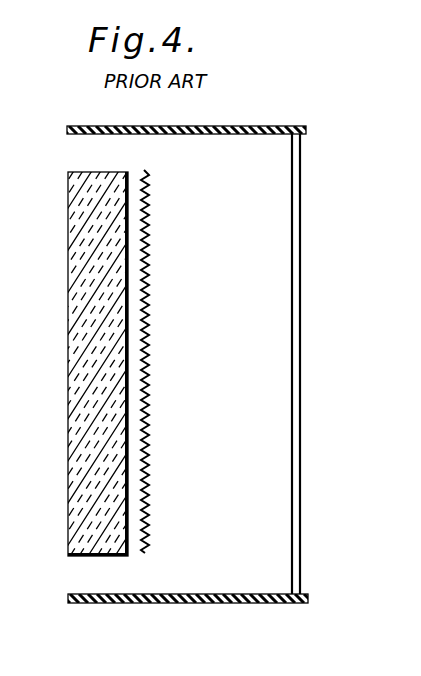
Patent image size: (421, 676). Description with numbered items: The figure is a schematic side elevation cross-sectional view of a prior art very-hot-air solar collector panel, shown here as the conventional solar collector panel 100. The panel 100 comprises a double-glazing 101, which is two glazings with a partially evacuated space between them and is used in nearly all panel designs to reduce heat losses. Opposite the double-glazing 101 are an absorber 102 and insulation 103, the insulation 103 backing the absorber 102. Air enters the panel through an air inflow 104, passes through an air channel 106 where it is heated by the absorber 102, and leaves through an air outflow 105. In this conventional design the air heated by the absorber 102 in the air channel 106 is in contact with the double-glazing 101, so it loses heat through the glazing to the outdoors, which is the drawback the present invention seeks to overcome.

The conventional solar collector panel 100 is at (188, 359).
The double-glazing 101 is at (301, 309).
The absorber 102 is at (142, 246).
The insulation 103 is at (115, 556).
The air inflow 104 is at (84, 578).
The air outflow 105 is at (72, 146).
The air channel 106 is at (260, 397).